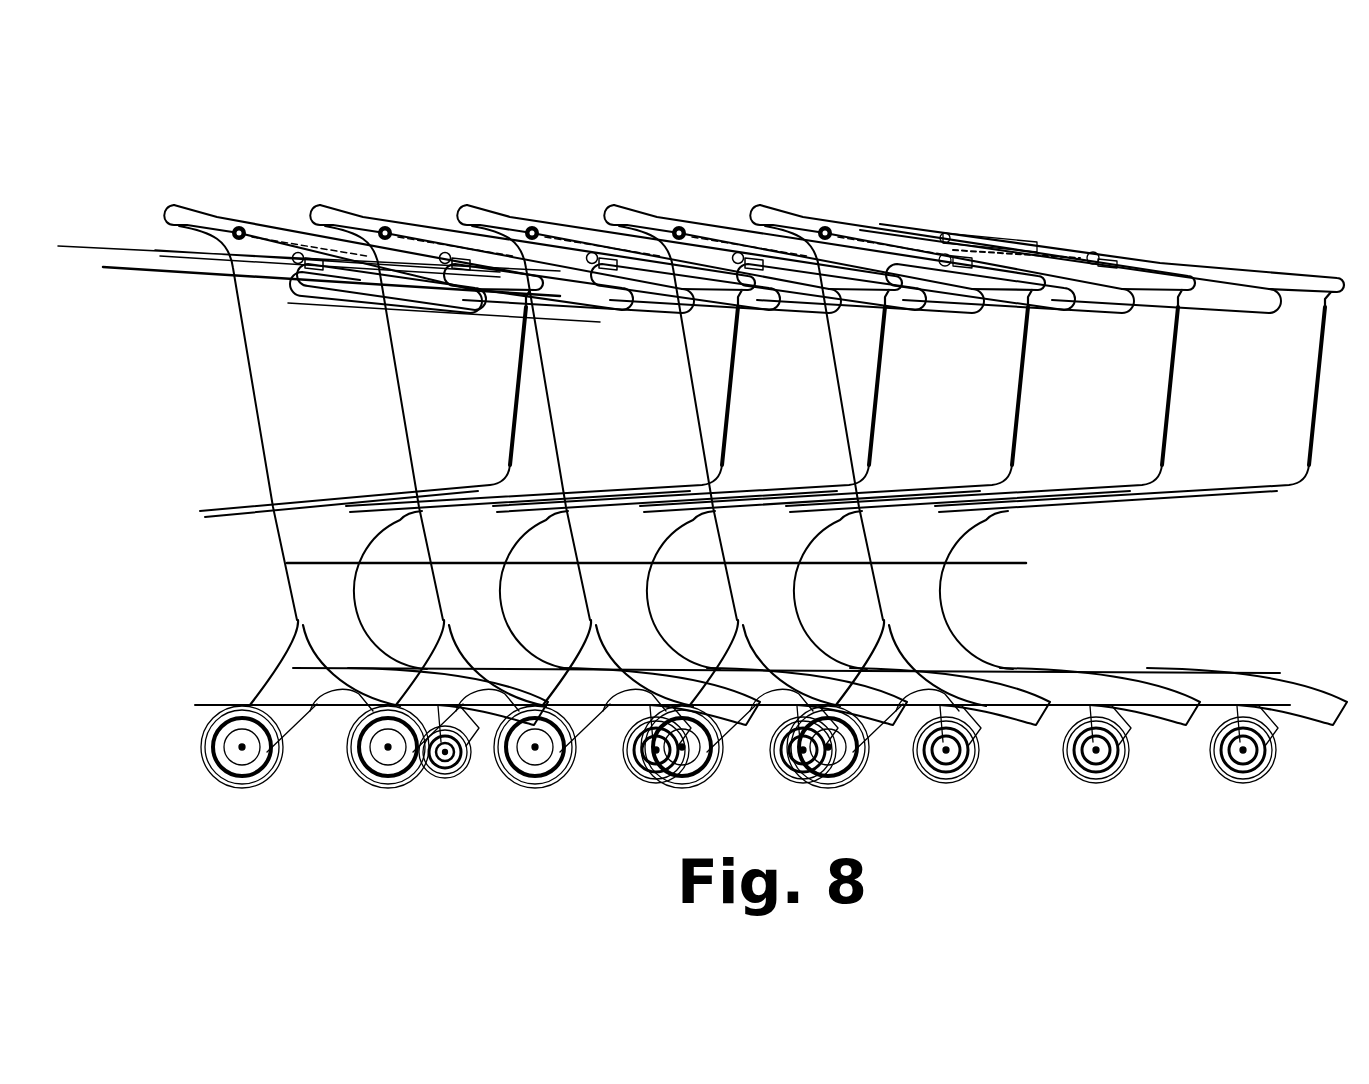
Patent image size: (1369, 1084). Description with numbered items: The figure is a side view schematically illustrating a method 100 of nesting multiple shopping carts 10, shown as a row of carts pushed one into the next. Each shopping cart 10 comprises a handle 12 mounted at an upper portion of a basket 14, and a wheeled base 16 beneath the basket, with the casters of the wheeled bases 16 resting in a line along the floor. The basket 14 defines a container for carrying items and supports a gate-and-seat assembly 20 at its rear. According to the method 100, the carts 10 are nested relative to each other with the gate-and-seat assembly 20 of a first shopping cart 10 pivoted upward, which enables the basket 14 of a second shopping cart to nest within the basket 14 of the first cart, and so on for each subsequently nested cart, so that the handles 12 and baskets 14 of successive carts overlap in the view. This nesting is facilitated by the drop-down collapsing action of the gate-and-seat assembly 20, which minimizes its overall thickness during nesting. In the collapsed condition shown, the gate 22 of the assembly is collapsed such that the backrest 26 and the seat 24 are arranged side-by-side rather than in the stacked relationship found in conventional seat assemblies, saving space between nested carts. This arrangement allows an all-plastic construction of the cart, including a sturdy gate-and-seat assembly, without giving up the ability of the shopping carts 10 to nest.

The method of nesting 100 is at (612, 150).
The shopping cart 10 is at (1291, 268).
The handle 12 is at (757, 207).
The basket 14 is at (762, 461).
The wheeled base 16 is at (1097, 690).
The gate-and-seat assembly 20 is at (840, 214).
The gate 22 is at (1074, 252).
The seat 24 is at (1007, 243).
The backrest 26 is at (912, 228).